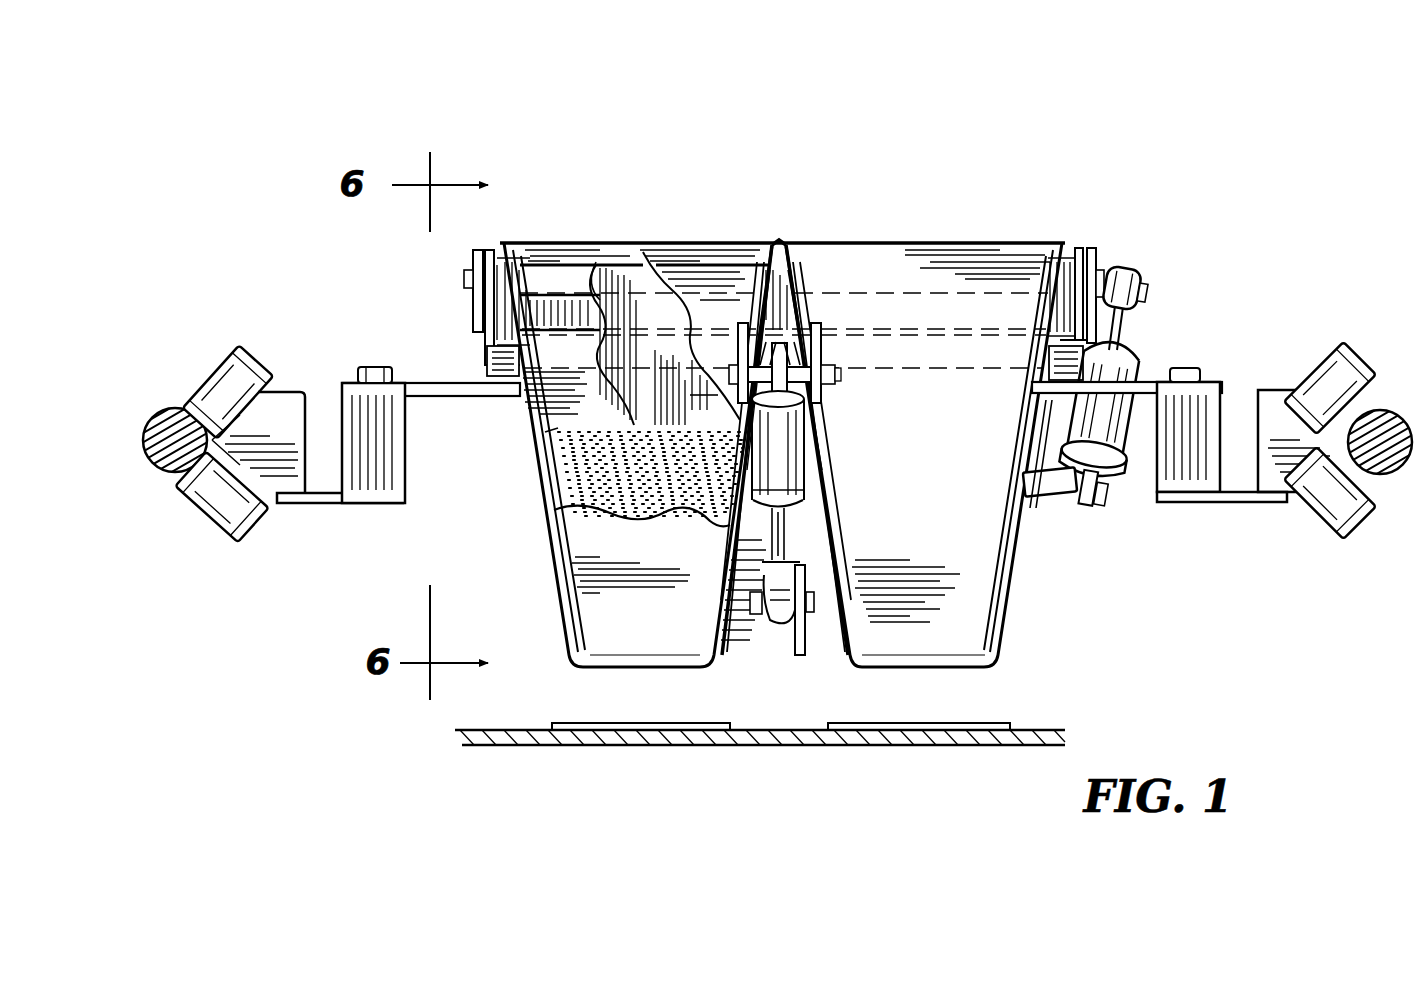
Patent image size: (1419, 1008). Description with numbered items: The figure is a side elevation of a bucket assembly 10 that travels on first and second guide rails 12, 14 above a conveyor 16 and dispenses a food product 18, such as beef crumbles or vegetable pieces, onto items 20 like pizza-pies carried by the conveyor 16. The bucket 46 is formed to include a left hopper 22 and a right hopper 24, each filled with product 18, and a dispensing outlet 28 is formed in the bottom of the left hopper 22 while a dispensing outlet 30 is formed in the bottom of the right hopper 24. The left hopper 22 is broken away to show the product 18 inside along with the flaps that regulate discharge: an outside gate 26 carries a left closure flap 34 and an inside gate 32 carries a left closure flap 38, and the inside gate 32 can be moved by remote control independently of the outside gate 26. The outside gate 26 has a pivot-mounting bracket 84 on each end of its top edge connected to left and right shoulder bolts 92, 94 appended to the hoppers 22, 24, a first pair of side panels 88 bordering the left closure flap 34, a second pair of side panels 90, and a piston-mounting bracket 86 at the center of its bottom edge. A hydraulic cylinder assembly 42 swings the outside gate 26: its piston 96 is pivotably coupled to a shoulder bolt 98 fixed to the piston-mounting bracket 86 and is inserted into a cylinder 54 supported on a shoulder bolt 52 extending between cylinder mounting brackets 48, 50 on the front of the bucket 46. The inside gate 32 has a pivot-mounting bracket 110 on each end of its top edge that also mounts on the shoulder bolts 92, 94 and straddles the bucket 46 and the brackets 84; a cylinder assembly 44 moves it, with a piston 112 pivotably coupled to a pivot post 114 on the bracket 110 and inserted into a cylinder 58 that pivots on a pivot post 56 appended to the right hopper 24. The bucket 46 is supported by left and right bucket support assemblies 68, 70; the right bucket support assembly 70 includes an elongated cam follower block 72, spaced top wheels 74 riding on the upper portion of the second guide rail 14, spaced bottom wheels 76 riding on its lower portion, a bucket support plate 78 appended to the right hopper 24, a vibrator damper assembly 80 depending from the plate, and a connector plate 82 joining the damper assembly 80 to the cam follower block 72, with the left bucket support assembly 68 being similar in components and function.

The bucket assembly 10 is at (1192, 282).
The first guide rail 12 is at (178, 448).
The second guide rail 14 is at (1396, 412).
The conveyor 16 is at (1064, 728).
The product 18 is at (562, 484).
The items 20 is at (552, 720).
The left hopper 22 is at (730, 285).
The right hopper 24 is at (890, 283).
The outside gate 26 is at (486, 354).
The dispensing outlet 28 is at (620, 673).
The dispensing outlet 30 is at (912, 675).
The inside gate 32 is at (597, 262).
The left closure flap 34 is at (550, 430).
The left closure flap 38 is at (714, 424).
The hydraulic cylinder assembly 42 is at (834, 476).
The cylinder assembly 44 is at (1138, 490).
The bucket 46 is at (876, 232).
The cylinder mounting bracket 48 is at (738, 346).
The cylinder mounting bracket 50 is at (822, 338).
The shoulder bolt 52 is at (838, 372).
The cylinder 54 is at (792, 454).
The pivot post 56 is at (1047, 512).
The cylinder 58 is at (1132, 446).
The left bucket support assembly 68 is at (261, 491).
The right bucket support assembly 70 is at (1221, 455).
The cam follower block 72 is at (1286, 390).
The top wheels 74 is at (1339, 356).
The bottom wheels 76 is at (1334, 525).
The bucket support plate 78 is at (1136, 386).
The vibrator damper assembly 80 is at (1200, 396).
The connector plate 82 is at (1257, 502).
The pivot-mounting bracket 84 is at (489, 262).
The piston-mounting bracket 86 is at (795, 640).
The first pair of side panels 88 is at (546, 555).
The second pair of side panels 90 is at (834, 637).
The left shoulder bolt 92 is at (522, 262).
The right shoulder bolt 94 is at (1060, 256).
The piston 96 is at (786, 532).
The shoulder bolt 98 is at (760, 626).
The pivot-mounting bracket 110 is at (474, 260).
The piston 112 is at (1122, 316).
The pivot post 114 is at (1148, 292).